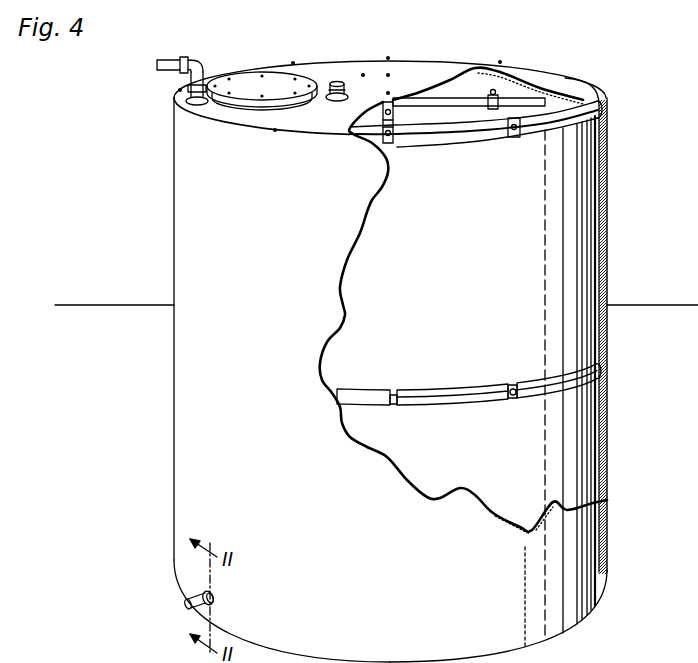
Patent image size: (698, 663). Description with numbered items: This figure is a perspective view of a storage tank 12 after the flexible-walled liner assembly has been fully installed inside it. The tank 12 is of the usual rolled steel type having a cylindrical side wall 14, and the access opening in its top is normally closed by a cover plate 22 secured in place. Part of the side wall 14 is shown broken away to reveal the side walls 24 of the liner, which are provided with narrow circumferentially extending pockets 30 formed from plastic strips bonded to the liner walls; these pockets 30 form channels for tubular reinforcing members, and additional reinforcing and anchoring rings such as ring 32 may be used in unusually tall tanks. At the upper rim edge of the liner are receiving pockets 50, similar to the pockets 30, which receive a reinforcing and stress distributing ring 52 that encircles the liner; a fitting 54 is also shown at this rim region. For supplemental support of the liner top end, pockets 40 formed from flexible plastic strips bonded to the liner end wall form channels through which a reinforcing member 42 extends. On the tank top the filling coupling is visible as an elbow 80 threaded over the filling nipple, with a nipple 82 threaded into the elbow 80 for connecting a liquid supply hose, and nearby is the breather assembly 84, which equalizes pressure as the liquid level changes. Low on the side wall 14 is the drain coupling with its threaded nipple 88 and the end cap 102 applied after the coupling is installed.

The storage tank 12 is at (590, 73).
The cylindrical side wall 14 is at (178, 182).
The cover plate 22 is at (258, 78).
The side walls of the liner 24 is at (568, 278).
The pockets 30 is at (455, 398).
The reinforcing and anchoring ring 32 is at (513, 402).
The pockets 40 is at (467, 99).
The reinforcing member 42 is at (497, 91).
The receiving pockets 50 is at (477, 137).
The reinforcing and stress distributing ring 52 is at (384, 145).
The clamp 54 is at (515, 136).
The elbow 80 is at (200, 74).
The nipple 82 is at (176, 52).
The breather assembly 84 is at (338, 79).
The threaded nipple 88 is at (206, 605).
The end cap 102 is at (184, 606).